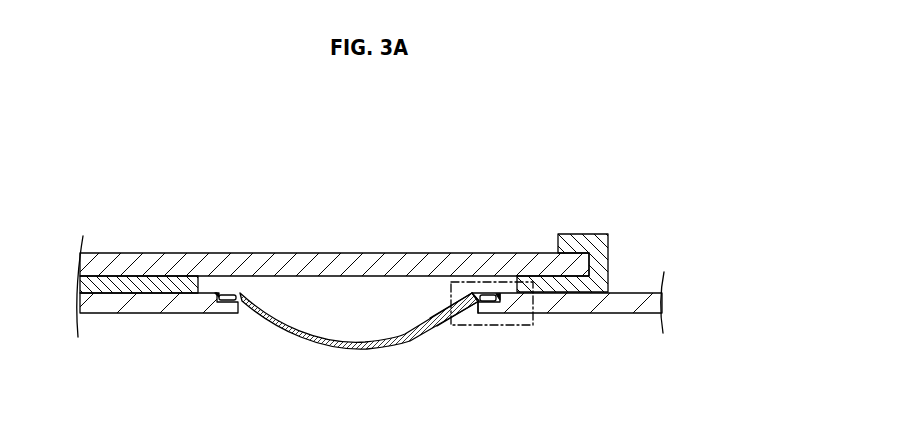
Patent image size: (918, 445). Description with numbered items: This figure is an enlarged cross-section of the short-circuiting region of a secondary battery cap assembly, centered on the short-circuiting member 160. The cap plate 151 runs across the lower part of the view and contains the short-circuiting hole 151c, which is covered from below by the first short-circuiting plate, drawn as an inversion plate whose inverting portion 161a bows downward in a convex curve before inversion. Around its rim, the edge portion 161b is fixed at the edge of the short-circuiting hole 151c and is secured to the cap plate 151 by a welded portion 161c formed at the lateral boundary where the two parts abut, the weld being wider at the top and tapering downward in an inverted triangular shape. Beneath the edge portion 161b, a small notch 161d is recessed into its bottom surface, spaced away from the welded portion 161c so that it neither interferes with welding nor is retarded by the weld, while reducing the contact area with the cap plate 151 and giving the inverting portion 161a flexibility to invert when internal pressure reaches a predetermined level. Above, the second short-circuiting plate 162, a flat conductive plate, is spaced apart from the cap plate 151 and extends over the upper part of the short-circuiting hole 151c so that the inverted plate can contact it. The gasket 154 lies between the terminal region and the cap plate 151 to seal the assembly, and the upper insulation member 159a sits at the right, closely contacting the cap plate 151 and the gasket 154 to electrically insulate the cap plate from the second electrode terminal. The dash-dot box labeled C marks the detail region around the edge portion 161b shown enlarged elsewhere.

The short-circuiting member 160 is at (532, 181).
The second short-circuiting plate 162 is at (268, 264).
The gasket 154 is at (148, 283).
The cap plate 151 is at (633, 305).
The short-circuiting hole 151c is at (452, 300).
The upper insulation member 159a is at (583, 245).
The inverting portion 161a is at (420, 337).
The edge portion 161b is at (482, 296).
The welded portion 161c is at (503, 300).
The notch 161d is at (484, 301).
The region C is at (461, 327).